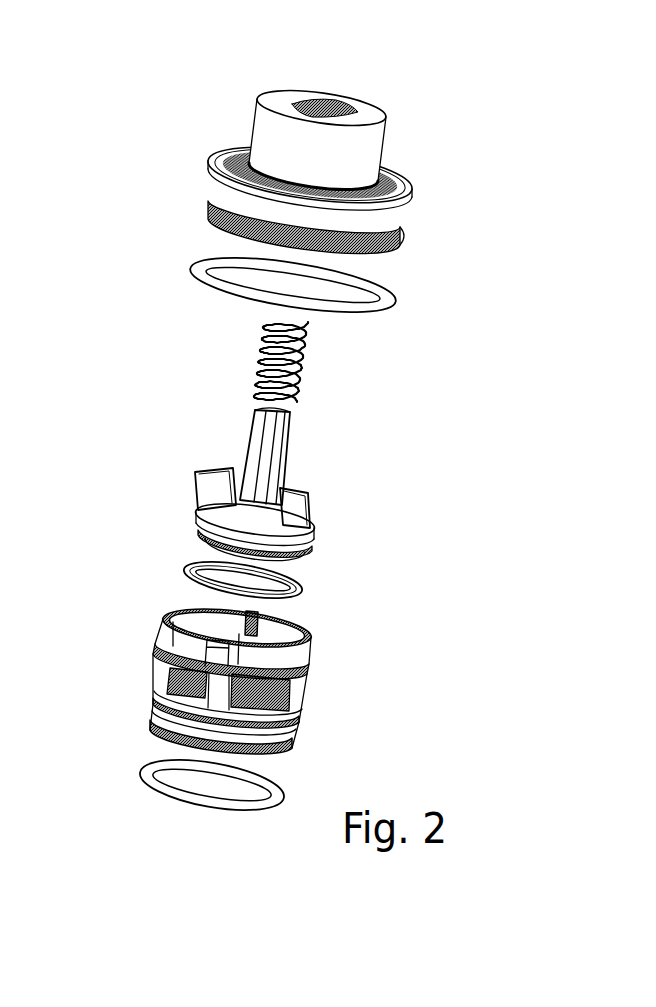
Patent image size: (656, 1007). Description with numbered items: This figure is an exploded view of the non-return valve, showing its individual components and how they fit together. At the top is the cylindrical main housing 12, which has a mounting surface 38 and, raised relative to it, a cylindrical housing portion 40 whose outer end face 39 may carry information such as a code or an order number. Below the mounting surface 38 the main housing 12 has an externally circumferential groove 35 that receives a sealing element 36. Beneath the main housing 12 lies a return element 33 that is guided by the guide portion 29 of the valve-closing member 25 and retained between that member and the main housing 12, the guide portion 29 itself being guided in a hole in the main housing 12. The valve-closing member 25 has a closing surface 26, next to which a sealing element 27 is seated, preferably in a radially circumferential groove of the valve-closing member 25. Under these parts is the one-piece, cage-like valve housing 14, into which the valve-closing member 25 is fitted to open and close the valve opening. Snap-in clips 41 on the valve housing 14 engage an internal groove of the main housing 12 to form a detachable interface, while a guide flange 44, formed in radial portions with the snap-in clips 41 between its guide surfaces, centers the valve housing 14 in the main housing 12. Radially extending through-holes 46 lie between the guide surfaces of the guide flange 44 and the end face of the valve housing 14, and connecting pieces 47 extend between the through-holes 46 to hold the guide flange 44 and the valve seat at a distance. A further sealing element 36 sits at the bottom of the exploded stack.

The main housing 12 is at (344, 133).
The valve housing 14 is at (250, 678).
The valve-closing member 25 is at (325, 484).
The closing surface 26 is at (290, 553).
The sealing element 27 is at (167, 568).
The guide portion 29 is at (290, 442).
The return element 33 is at (318, 368).
The externally circumferential groove 35 is at (412, 232).
The sealing element 36 is at (168, 274).
The mounting surface 38 is at (228, 152).
The outer end face 39 is at (313, 78).
The cylindrical housing portion 40 is at (372, 155).
The snap-in clip 41 is at (280, 609).
The guide flange 44 is at (148, 636).
The through-holes 46 is at (146, 672).
The connecting pieces 47 is at (165, 712).